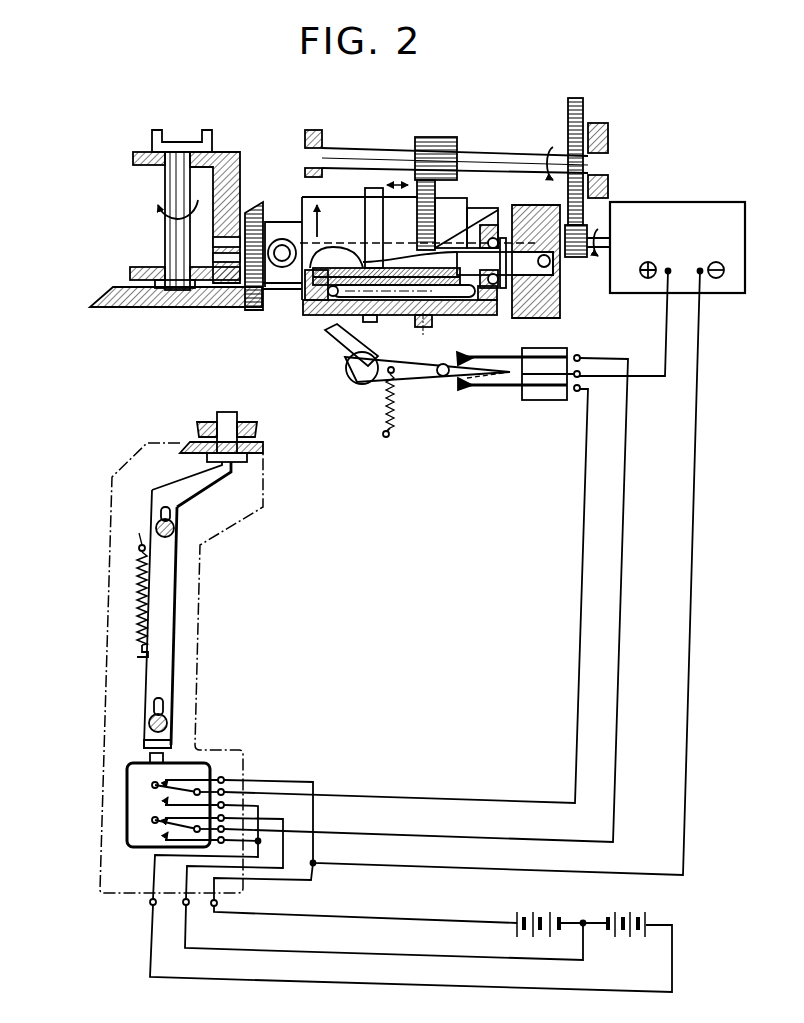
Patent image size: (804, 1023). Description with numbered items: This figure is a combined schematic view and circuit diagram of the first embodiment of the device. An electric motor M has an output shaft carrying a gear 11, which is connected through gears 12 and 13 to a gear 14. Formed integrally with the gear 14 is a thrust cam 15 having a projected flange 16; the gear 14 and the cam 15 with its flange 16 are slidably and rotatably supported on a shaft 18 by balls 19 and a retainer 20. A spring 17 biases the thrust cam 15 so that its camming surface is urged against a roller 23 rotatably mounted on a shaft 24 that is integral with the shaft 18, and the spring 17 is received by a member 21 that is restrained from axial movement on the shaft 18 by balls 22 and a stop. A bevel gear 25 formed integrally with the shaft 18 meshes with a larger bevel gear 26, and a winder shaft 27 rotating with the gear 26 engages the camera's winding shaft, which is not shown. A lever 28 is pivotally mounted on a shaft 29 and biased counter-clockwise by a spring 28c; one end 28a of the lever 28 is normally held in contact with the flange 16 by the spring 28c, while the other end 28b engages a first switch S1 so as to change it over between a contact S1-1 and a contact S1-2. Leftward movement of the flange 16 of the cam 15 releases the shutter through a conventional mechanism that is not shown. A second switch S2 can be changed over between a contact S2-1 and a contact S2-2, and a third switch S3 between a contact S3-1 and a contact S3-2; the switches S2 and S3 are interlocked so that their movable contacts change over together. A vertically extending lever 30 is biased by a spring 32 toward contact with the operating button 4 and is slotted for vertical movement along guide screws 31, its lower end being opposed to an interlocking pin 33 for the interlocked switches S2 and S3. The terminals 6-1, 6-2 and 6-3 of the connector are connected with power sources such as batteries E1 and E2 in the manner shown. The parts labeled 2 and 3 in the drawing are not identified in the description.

The frame 2 is at (154, 267).
The lever member 3 is at (252, 468).
The operating button 4 is at (238, 442).
The gear 11 is at (575, 258).
The gear 12 is at (575, 98).
The gear 13 is at (437, 137).
The gear 14 is at (436, 197).
The thrust cam 15 is at (297, 303).
The projected flange 16 is at (372, 188).
The spring 17 is at (352, 298).
The shaft 18 is at (455, 255).
The balls 19 is at (432, 320).
The retainer 20 is at (398, 268).
The member 21 is at (493, 237).
The balls 22 is at (544, 255).
The roller 23 is at (276, 290).
The shaft 24 is at (282, 239).
The bevel gear 25 is at (247, 308).
The larger bevel gear 26 is at (179, 298).
The winder shaft 27 is at (213, 131).
The lever 28 is at (330, 347).
The cam follower 28a is at (350, 247).
The other end of lever 28b is at (443, 378).
The spring 28c is at (392, 415).
The shaft 29 is at (362, 373).
The vertically extending lever 30 is at (153, 491).
The guide screws 31 is at (170, 515).
The spring 32 is at (138, 597).
The interlocking pin 33 is at (142, 545).
The first switch S1 is at (440, 363).
The contact S1-1 is at (472, 356).
The contact S1-2 is at (466, 389).
The second switch S2 is at (153, 786).
The contact S2-1 is at (166, 784).
The contact S2-2 is at (166, 798).
The third switch S3 is at (166, 819).
The contact S3-1 is at (154, 821).
The contact S3-2 is at (166, 834).
The terminal 6-1 is at (150, 905).
The terminal 6-2 is at (188, 905).
The terminal 6-3 is at (217, 903).
The battery E1 is at (538, 910).
The battery E2 is at (626, 910).
The electric motor M is at (677, 247).